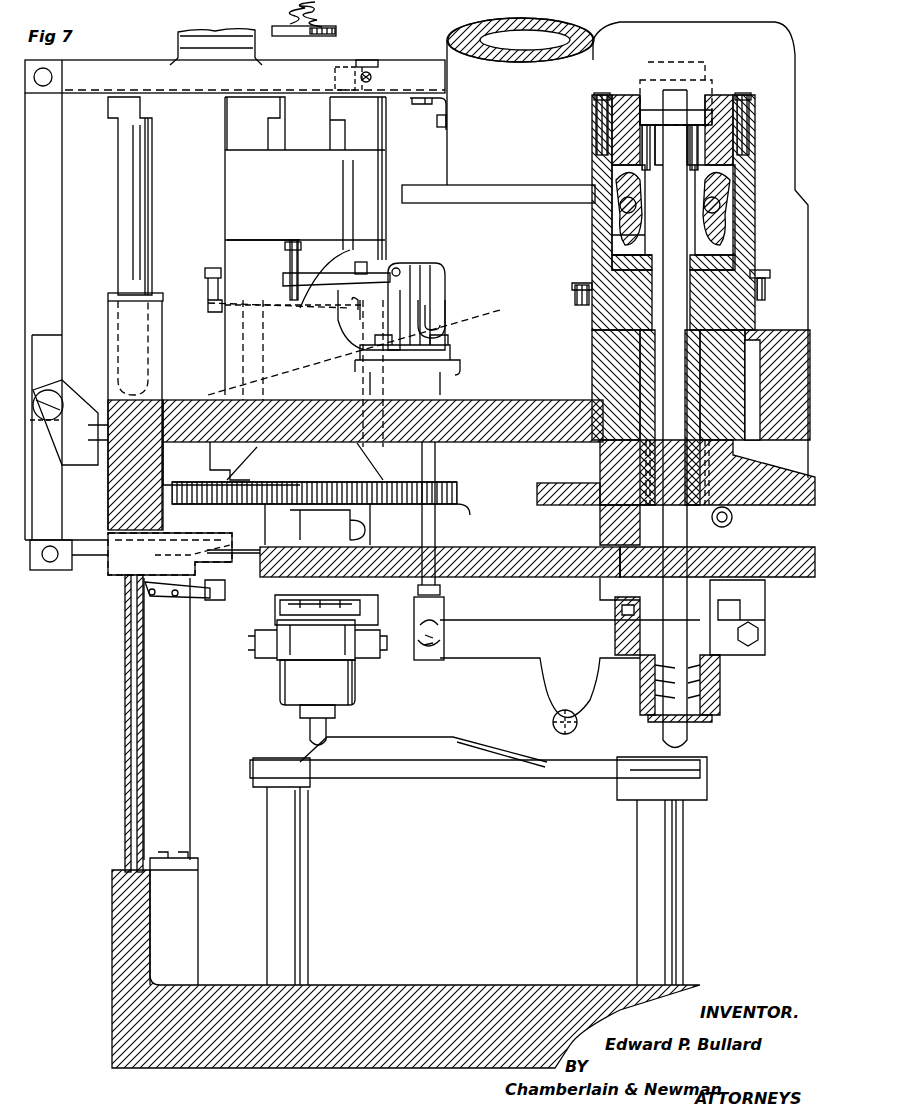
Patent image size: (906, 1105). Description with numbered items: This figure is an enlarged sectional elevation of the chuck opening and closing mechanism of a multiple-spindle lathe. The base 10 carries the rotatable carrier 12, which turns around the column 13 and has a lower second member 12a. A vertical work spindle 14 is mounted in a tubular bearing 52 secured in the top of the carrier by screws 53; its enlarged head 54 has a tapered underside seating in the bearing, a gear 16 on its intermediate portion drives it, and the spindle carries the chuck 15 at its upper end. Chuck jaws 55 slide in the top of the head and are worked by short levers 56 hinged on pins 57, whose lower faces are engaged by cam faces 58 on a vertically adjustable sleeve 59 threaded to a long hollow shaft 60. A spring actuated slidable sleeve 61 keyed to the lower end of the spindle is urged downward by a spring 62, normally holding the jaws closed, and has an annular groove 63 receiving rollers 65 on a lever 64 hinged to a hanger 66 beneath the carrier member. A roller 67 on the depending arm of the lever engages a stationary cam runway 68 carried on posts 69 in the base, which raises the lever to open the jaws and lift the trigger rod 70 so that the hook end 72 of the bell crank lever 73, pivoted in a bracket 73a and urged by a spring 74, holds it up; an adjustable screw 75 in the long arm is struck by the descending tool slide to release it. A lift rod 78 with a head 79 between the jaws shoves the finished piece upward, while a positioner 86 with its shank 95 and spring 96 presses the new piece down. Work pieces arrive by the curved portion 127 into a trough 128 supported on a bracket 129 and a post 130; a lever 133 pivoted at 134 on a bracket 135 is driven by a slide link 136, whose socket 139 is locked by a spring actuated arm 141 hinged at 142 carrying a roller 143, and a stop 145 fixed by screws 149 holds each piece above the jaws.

The base 10 is at (395, 992).
The rotatable carrier 12 is at (520, 402).
The second member of the carrier 12a is at (495, 577).
The column 13 is at (457, 162).
The work spindle 14 is at (360, 531).
The work table or chuck 15 is at (227, 193).
The gear 16 is at (463, 512).
The tubular bearing 52 is at (208, 304).
The screw 53 is at (212, 266).
The enlarged head 54 is at (755, 248).
The chuck jaw 55 is at (612, 95).
The lever 56 is at (716, 195).
The pin 57 is at (622, 208).
The cam face 58 is at (640, 238).
The vertically adjustable sleeve 59 is at (645, 258).
The hollow shaft 60 is at (640, 520).
The spring actuated slidable sleeve 61 is at (722, 680).
The spring 62 is at (355, 688).
The annular groove 63 is at (295, 640).
The lever 64 is at (555, 630).
The roller 65 is at (285, 625).
The hanger 66 is at (360, 598).
The roller 67 is at (552, 722).
The cam runway 68 is at (462, 748).
The post 69 is at (312, 885).
The trigger rod 70 is at (442, 590).
The hook end 72 is at (436, 322).
The bell crank lever 73 is at (412, 265).
The bracket 73a is at (370, 350).
The spring 74 is at (340, 330).
The adjustable screw 75 is at (299, 252).
The lift rod 78 is at (690, 732).
The head 79 is at (690, 125).
The positioner 86 is at (338, 31).
The shank 95 is at (322, 10).
The spring 96 is at (292, 12).
The depending curved portion 127 is at (178, 40).
The trough 128 is at (392, 93).
The bracket 129 is at (436, 126).
The post 130 is at (150, 133).
The lever 133 is at (57, 187).
The pivot 134 is at (58, 398).
The bracket 135 is at (95, 385).
The slide link 136 is at (90, 568).
The socket 139 is at (180, 545).
The spring actuated arm 141 is at (193, 610).
The hinge 142 is at (157, 600).
The roller 143 is at (212, 602).
The stop 145 is at (375, 80).
The screw 149 is at (378, 63).